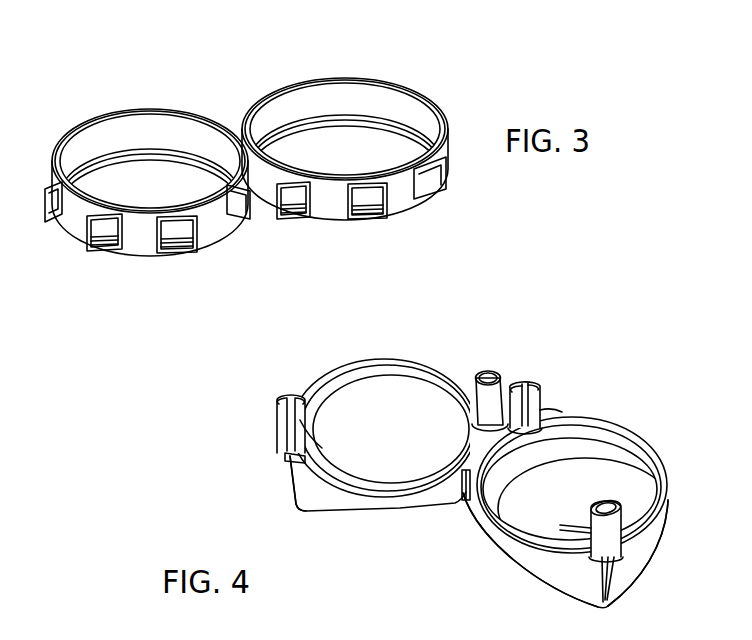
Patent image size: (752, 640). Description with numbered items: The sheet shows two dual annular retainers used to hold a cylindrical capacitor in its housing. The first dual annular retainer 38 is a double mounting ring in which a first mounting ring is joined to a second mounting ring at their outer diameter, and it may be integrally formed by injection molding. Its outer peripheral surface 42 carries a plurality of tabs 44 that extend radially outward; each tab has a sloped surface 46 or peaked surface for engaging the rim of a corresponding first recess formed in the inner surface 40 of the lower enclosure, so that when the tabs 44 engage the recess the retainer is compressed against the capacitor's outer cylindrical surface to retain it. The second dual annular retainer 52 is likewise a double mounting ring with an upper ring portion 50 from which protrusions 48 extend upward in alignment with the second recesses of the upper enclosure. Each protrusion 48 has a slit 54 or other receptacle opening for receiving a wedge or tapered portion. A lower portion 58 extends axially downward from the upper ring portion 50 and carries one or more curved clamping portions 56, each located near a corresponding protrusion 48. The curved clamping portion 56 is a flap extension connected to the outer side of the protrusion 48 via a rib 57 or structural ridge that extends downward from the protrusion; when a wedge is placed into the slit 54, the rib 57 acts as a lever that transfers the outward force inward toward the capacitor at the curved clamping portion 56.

In FIG. 3, the first dual annular retainer 38 is at (228, 76).
In FIG. 3, the inner surface 40 is at (87, 147).
In FIG. 3, the outer peripheral surface 42 is at (75, 226).
In FIG. 3, the tabs 44 is at (95, 248).
In FIG. 3, the sloped surface 46 is at (105, 251).
In FIG. 4, the protrusions 48 is at (280, 428).
In FIG. 4, the upper ring portion 50 is at (412, 370).
In FIG. 4, the second dual annular retainer 52 is at (481, 350).
In FIG. 4, the slit 54 is at (313, 422).
In FIG. 4, the curved clamping portion 56 is at (323, 500).
In FIG. 4, the rib 57 is at (613, 581).
In FIG. 4, the lower portion 58 is at (385, 503).